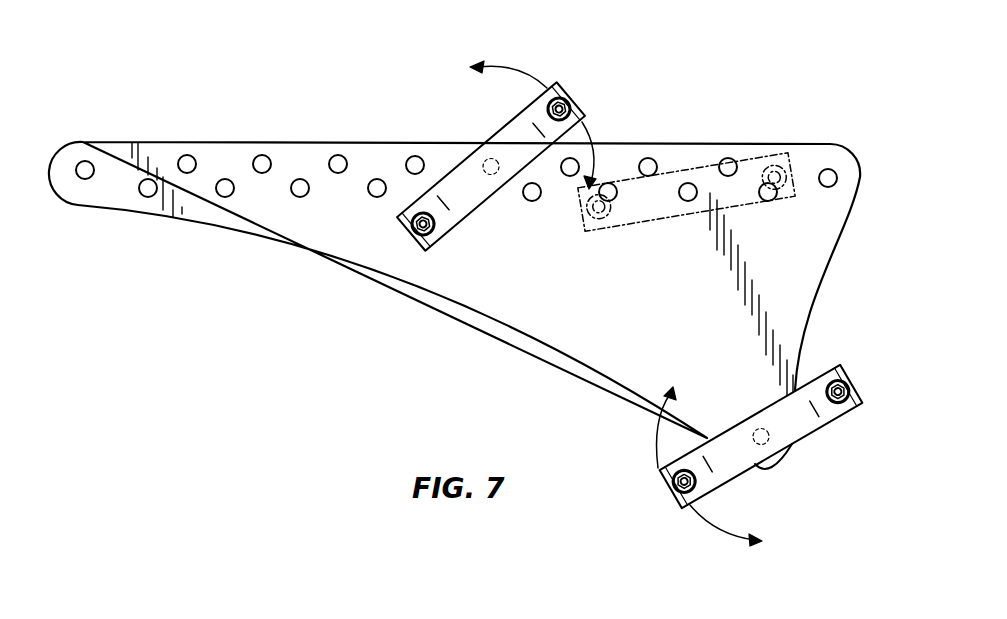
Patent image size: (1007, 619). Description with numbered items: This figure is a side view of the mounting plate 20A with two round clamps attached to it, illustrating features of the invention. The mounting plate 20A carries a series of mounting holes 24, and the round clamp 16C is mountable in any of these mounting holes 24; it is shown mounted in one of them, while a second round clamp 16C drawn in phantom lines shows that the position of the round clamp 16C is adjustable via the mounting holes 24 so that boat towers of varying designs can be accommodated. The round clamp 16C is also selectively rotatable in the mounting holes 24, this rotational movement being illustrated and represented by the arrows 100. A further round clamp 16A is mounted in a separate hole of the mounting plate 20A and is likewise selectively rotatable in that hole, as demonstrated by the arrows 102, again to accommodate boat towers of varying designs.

The mounting plate 20A is at (487, 285).
The mounting holes 24 is at (338, 160).
The round clamp 16C is at (468, 175).
The round clamp 16A is at (805, 417).
The arrows 100 is at (585, 125).
The arrows 102 is at (655, 437).